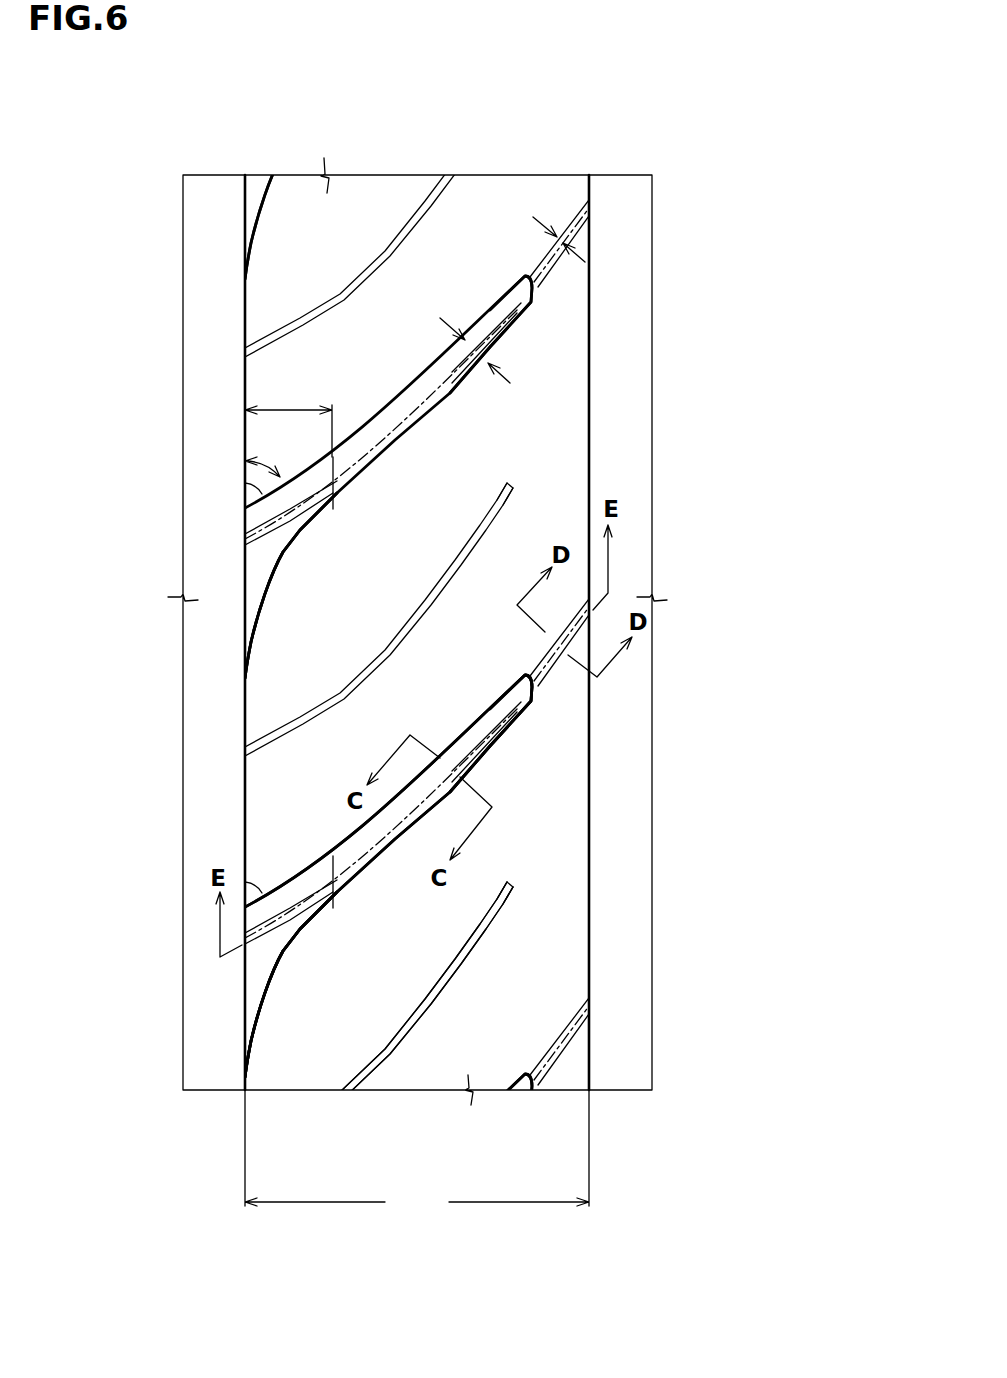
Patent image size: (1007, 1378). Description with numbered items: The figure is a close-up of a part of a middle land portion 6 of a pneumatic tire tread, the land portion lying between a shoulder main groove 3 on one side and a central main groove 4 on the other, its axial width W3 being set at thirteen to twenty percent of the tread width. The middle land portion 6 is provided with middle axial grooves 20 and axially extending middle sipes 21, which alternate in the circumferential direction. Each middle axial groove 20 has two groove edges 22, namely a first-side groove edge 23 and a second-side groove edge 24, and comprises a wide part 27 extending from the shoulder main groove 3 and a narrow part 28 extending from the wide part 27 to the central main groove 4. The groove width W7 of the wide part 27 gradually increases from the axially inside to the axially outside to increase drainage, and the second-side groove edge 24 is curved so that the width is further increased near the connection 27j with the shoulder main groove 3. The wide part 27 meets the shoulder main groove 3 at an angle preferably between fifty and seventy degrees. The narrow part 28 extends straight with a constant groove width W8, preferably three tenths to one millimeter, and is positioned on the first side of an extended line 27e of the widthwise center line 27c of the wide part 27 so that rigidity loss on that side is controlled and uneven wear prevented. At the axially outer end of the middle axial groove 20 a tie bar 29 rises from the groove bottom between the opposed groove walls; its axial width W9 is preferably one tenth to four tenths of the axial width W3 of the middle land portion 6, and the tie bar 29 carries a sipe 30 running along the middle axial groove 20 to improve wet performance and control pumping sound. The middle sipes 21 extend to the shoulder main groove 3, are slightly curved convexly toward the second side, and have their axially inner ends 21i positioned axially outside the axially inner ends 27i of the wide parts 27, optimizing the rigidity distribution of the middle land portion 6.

The shoulder main groove 3 is at (220, 191).
The central main groove 4 is at (622, 183).
The middle land portion 6 is at (384, 188).
The middle axial groove 20 is at (743, 313).
The middle sipe 21 is at (418, 227).
The axially inner end of middle sipe 21i is at (510, 482).
The groove edge 22 is at (367, 815).
The first-side groove edge 23 is at (388, 785).
The second-side groove edge 24 is at (262, 599).
The wide part 27 is at (445, 396).
The widthwise center line 27c is at (413, 410).
The extended line 27e is at (382, 668).
The axially inner end of wide part 27i is at (535, 672).
The connection 27j is at (249, 580).
The narrow part 28 is at (535, 280).
The tie bar 29 is at (257, 523).
The sipe 30 is at (256, 518).
The axial width of middle land portion W3 is at (417, 1152).
The groove width of wide part W7 is at (496, 305).
The groove width of narrow part W8 is at (568, 240).
The axial width of tie bar W9 is at (288, 418).